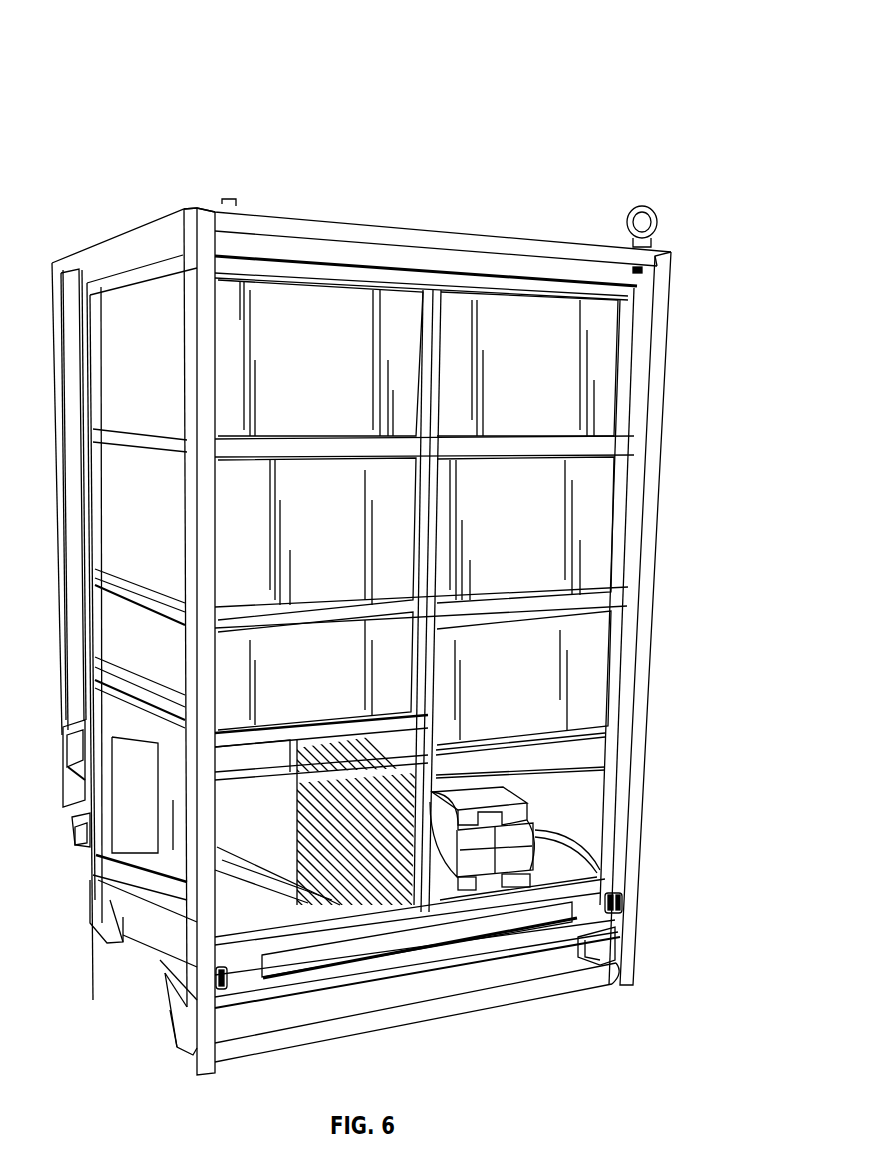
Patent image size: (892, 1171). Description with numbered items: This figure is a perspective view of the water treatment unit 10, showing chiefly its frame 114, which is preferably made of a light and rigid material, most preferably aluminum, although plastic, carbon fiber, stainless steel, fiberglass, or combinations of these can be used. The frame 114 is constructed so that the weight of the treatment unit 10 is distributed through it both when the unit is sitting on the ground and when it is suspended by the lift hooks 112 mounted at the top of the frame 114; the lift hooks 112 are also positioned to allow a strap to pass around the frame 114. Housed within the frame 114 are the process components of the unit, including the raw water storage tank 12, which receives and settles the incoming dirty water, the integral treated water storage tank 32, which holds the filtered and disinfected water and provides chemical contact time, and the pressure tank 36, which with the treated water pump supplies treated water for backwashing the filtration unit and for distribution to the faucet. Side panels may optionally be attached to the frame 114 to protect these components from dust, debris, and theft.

The treatment unit 10 is at (690, 180).
The raw water storage tank 12 is at (337, 547).
The integral treated water storage tank 32 is at (532, 546).
The pressure tank 36 is at (610, 905).
The lift hooks 112 is at (641, 206).
The frame 114 is at (192, 245).